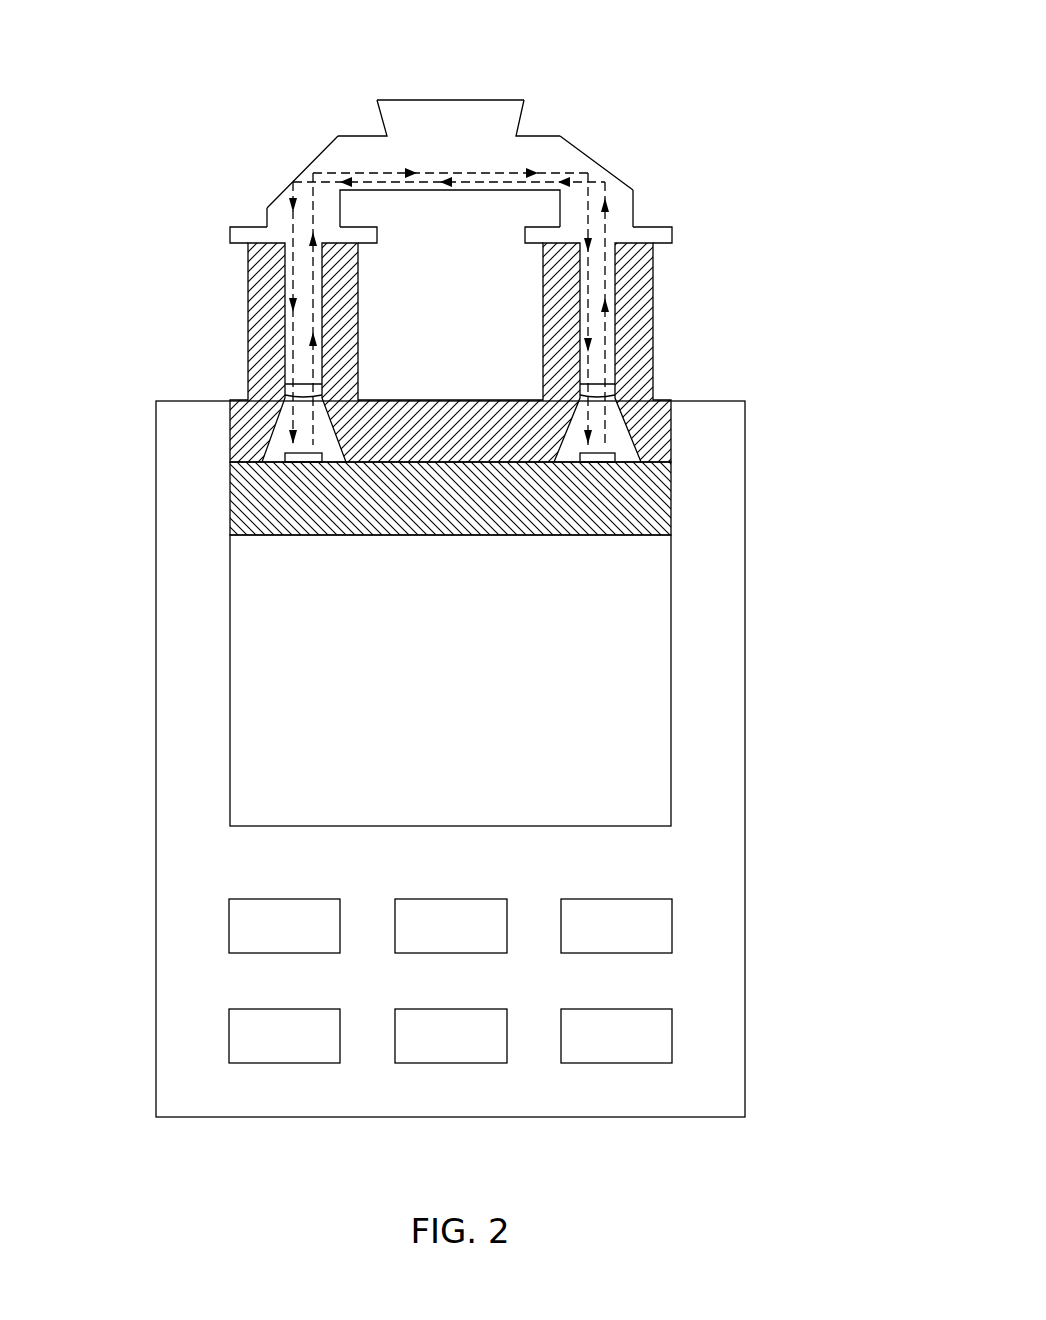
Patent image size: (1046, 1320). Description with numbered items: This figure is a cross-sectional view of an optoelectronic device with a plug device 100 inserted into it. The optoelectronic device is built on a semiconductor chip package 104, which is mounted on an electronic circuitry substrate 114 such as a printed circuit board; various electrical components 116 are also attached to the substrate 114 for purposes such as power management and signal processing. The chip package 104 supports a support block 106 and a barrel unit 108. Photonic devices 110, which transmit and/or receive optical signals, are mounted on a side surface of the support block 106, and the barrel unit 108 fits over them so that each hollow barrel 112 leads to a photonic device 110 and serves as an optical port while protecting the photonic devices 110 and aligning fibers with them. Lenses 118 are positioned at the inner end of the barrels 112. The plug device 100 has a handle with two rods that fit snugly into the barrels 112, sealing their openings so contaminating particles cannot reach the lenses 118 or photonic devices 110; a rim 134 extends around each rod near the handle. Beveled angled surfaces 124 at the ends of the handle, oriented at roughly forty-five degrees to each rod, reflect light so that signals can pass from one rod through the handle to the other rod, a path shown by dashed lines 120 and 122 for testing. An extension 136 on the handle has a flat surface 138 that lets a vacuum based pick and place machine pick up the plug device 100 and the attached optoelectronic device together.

The plug device 100 is at (637, 208).
The semiconductor chip package 104 is at (422, 673).
The support block 106 is at (672, 498).
The barrel unit 108 is at (672, 432).
The photonic devices 110 is at (285, 455).
The barrels 112 is at (653, 298).
The electronic circuitry substrate 114 is at (156, 813).
The electrical components 116 is at (463, 1063).
The lenses 118 is at (310, 392).
The dashed line 120 is at (535, 170).
The dashed line 122 is at (603, 180).
The angled surfaces 124 is at (332, 142).
The rim 134 is at (230, 235).
The extension 136 is at (522, 115).
The flat surface 138 is at (443, 100).